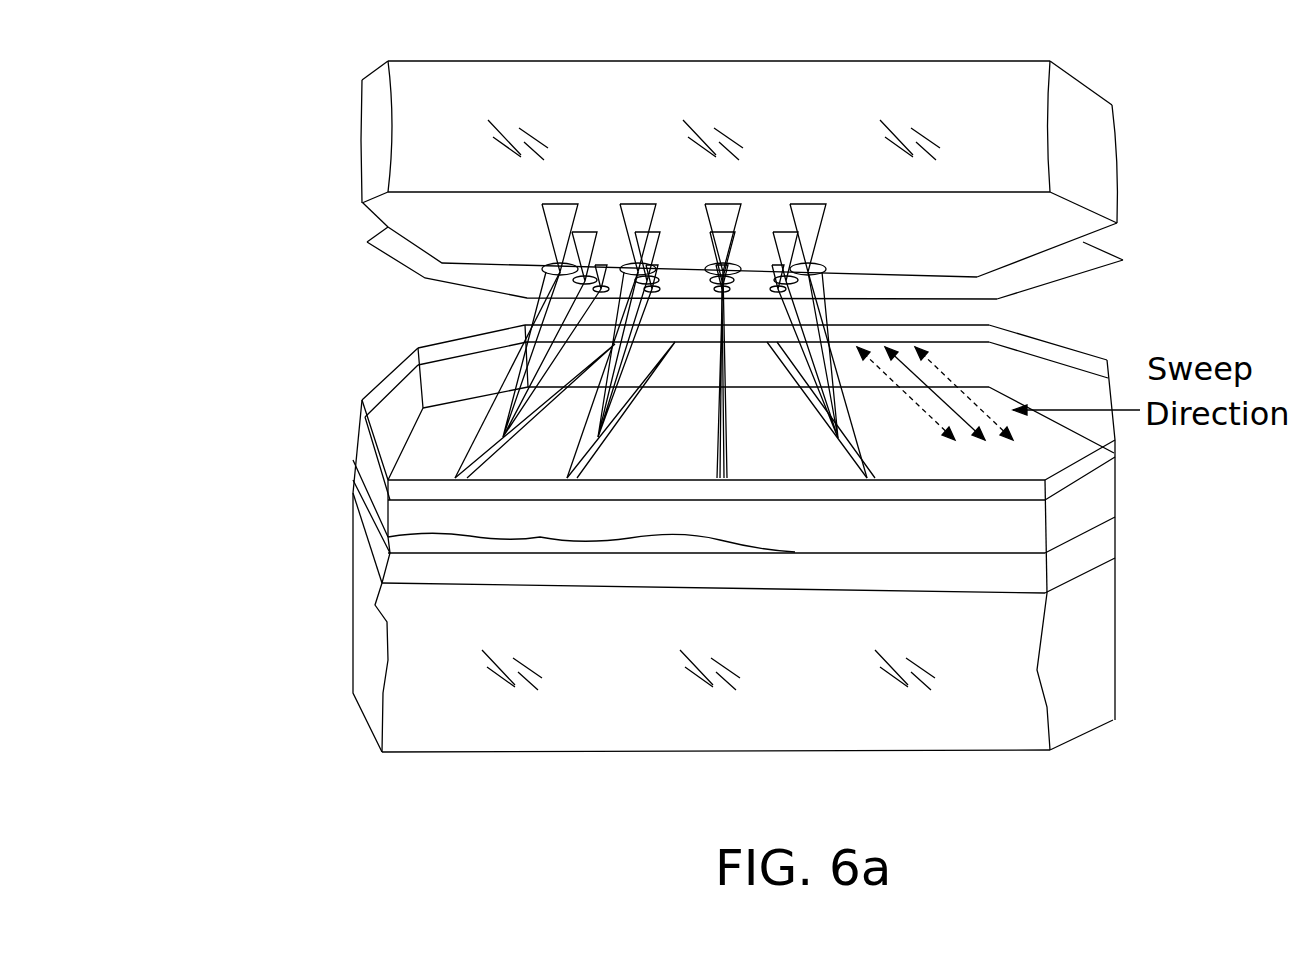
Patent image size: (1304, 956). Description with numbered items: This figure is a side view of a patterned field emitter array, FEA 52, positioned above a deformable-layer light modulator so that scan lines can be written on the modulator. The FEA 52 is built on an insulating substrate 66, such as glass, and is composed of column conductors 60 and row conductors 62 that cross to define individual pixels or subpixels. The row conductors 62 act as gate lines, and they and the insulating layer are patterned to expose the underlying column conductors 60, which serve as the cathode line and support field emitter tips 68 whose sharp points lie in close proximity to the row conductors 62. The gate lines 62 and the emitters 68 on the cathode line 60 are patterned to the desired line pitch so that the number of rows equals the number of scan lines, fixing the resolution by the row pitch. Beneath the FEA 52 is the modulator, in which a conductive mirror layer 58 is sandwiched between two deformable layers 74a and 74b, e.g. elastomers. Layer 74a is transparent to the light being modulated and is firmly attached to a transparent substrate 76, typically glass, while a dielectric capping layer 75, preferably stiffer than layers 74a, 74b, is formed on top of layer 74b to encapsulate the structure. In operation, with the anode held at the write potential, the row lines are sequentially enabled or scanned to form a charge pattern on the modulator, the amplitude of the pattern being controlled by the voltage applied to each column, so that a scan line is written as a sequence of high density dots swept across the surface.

The FEA 52 is at (333, 70).
The insulating substrate 66 is at (640, 142).
The field emitter tips 68 is at (473, 293).
The column conductors 60 is at (1117, 223).
The row conductors 62 is at (1123, 260).
The mirror layer 58 is at (360, 460).
The deformable layer 74b is at (360, 410).
The deformable layer 74a is at (358, 483).
The capping layer 75 is at (1118, 443).
The transparent substrate 76 is at (635, 662).